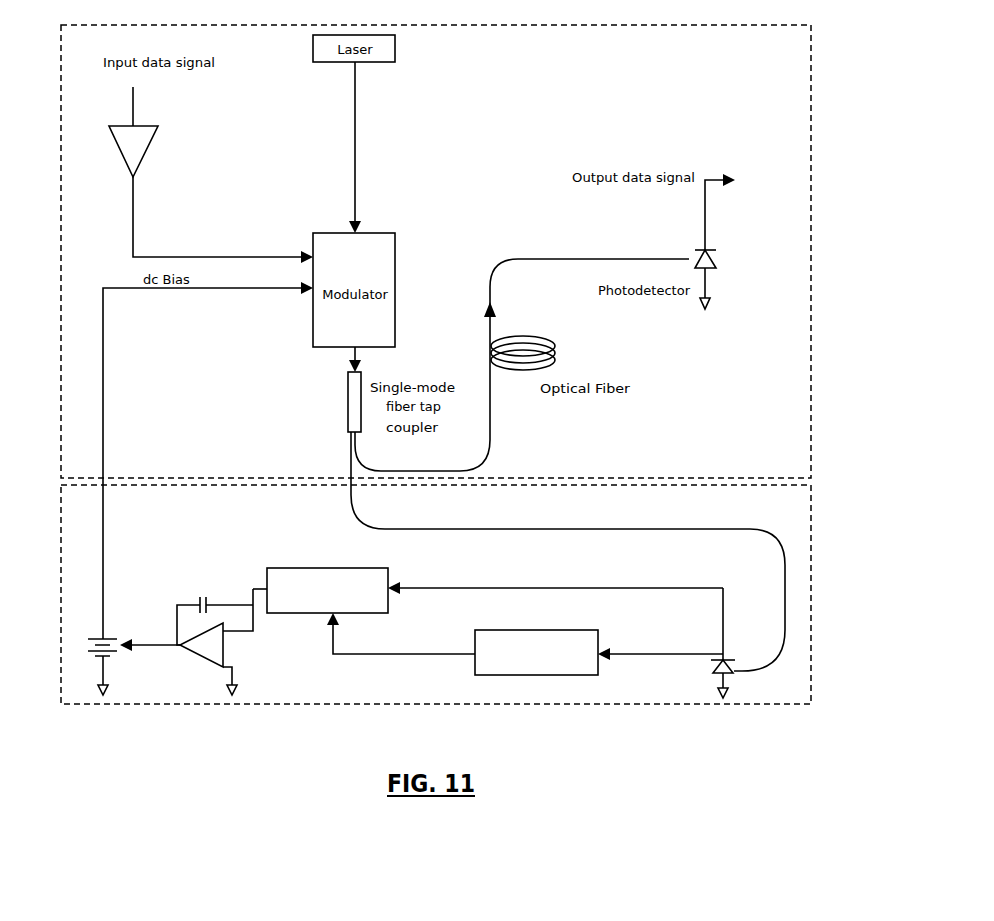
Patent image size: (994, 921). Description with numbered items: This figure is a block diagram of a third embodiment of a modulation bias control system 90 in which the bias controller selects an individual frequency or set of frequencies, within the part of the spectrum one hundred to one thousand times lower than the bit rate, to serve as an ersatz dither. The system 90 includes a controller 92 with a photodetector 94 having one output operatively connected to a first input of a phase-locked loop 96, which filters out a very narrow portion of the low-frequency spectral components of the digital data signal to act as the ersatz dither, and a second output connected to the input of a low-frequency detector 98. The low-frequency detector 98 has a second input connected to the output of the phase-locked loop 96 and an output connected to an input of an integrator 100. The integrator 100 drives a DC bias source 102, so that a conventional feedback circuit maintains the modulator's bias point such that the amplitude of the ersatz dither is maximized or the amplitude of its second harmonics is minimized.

The system 90 is at (738, 786).
The controller 92 is at (61, 512).
The photodetector 94 is at (715, 677).
The phase-locked loop 96 is at (543, 630).
The low-frequency detector 98 is at (322, 568).
The integrator 100 is at (251, 673).
The DC bias source 102 is at (110, 637).